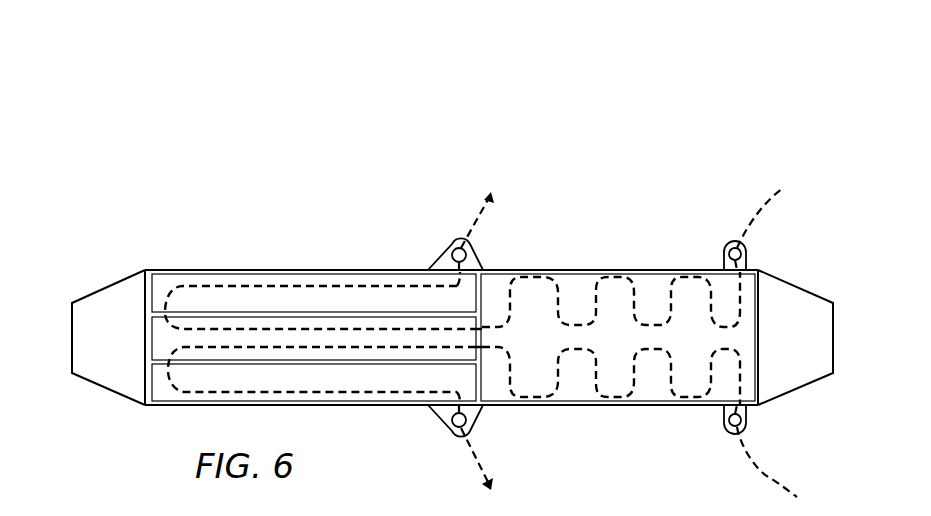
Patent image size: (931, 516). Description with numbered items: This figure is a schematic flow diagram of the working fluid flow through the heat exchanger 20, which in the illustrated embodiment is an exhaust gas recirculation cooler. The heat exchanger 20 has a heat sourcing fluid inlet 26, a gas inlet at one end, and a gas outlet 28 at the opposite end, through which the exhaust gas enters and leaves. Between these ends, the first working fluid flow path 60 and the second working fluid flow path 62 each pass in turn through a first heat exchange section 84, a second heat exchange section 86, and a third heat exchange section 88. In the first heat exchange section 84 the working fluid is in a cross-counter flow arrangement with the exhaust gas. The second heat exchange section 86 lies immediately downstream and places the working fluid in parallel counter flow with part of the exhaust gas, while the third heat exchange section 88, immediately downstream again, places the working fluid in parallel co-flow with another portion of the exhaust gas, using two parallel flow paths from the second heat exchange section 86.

The heat exchanger 20 is at (544, 117).
The heat sourcing fluid inlet 26 is at (72, 334).
The gas outlet 28 is at (833, 338).
The first working fluid flow path 60 is at (758, 210).
The second working fluid flow path 62 is at (782, 486).
The first heat exchange section 84 is at (580, 280).
The second heat exchange section 86 is at (318, 346).
The third heat exchange section 88 is at (228, 289).